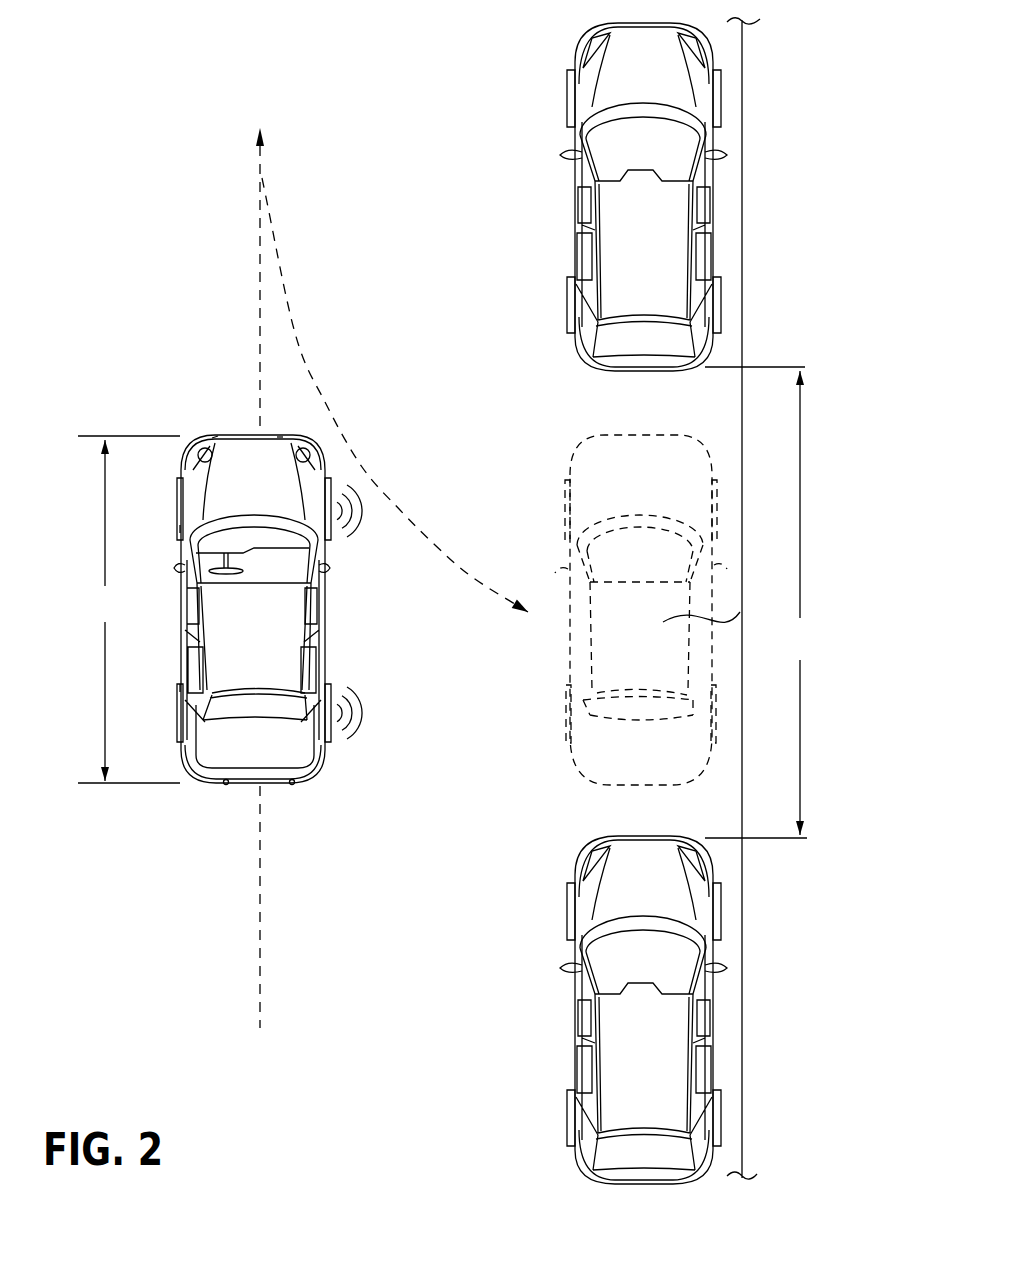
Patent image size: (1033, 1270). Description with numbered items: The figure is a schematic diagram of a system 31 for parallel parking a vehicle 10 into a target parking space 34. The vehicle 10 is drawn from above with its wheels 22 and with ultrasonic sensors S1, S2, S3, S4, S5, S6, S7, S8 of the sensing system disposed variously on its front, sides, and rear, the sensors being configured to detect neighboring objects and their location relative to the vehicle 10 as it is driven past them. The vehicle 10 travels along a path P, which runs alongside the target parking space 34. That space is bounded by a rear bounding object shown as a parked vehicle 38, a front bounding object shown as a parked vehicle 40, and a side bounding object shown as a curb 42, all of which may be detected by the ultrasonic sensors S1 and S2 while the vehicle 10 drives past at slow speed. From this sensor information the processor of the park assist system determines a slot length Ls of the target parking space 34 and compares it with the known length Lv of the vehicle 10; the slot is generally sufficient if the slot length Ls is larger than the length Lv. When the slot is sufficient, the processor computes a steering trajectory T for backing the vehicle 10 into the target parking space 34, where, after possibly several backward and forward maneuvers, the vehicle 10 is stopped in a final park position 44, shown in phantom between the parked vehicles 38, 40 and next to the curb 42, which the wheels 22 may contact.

The vehicle 10 is at (176, 603).
The wheels 22 is at (341, 438).
The system 31 is at (152, 183).
The target parking space 34 is at (740, 612).
The parked vehicle 38 is at (574, 1000).
The parked vehicle 40 is at (574, 212).
The curb 42 is at (740, 443).
The final park position 44 is at (618, 435).
The ultrasonic sensor S1 is at (331, 528).
The ultrasonic sensor S2 is at (328, 692).
The ultrasonic sensor S3 is at (294, 784).
The ultrasonic sensor S4 is at (225, 785).
The ultrasonic sensor S5 is at (178, 688).
The ultrasonic sensor S6 is at (180, 529).
The ultrasonic sensor S7 is at (215, 438).
The ultrasonic sensor S8 is at (279, 437).
The steering trajectory T is at (295, 328).
The path P is at (260, 970).
The length of the vehicle Lv is at (129, 609).
The slot length Ls is at (759, 602).